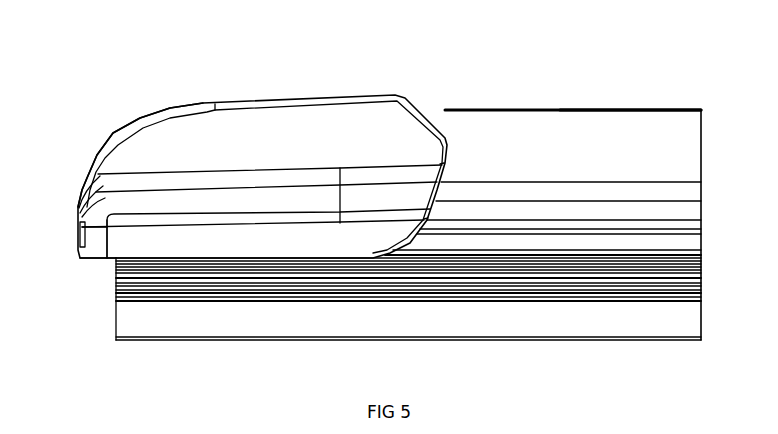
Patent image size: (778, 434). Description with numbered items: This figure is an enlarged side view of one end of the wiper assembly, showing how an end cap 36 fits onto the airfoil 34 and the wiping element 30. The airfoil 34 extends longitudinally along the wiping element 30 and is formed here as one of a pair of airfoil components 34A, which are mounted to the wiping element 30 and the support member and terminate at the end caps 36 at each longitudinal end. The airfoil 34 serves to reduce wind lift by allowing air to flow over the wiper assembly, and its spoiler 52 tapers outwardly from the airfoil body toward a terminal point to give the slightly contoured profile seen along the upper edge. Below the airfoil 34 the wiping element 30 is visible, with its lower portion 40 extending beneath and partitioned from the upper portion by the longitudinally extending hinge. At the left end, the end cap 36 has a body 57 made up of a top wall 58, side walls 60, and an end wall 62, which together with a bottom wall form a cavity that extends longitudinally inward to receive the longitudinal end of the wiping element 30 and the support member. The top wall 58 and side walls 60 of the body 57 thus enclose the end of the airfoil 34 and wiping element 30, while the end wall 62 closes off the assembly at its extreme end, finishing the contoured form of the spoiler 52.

The wiping element 30 is at (578, 340).
The airfoil 34 is at (528, 110).
The airfoil component 34A is at (618, 110).
The end cap 36 is at (230, 100).
The lower portion 40 is at (682, 327).
The spoiler 52 is at (685, 153).
The body 57 is at (135, 125).
The top wall 58 is at (145, 203).
The side wall 60 is at (133, 243).
The end wall 62 is at (80, 210).